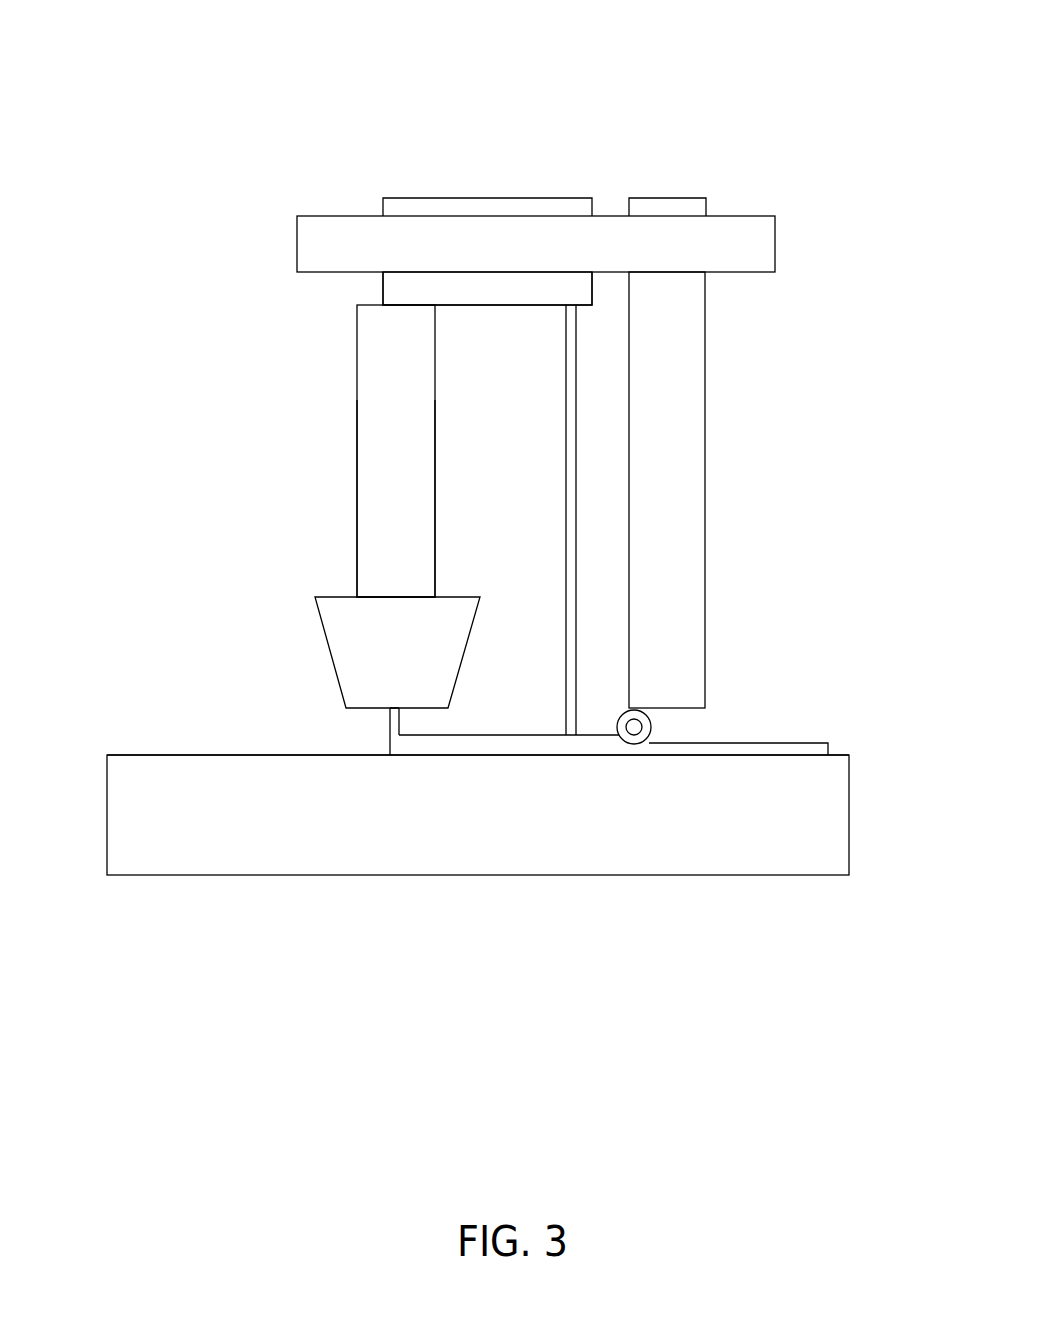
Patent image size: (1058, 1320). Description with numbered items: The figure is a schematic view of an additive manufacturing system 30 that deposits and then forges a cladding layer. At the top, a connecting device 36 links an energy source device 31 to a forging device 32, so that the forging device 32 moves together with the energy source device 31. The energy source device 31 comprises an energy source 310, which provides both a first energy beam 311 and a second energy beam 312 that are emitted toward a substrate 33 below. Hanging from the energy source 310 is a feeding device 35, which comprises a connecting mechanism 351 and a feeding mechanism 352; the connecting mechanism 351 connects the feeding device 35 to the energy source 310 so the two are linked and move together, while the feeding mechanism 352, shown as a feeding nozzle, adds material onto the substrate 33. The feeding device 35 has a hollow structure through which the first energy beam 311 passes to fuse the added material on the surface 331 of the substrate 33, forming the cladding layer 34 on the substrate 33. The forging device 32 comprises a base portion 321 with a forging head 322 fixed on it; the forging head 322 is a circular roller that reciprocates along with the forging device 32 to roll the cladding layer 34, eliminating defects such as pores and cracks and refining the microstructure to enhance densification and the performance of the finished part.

The additive manufacturing system 30 is at (384, 49).
The energy source device 31 is at (473, 202).
The energy source 310 is at (468, 288).
The first energy beam 311 is at (390, 728).
The second energy beam 312 is at (565, 463).
The forging device 32 is at (705, 200).
The base portion 321 is at (706, 463).
The forging head 322 is at (652, 728).
The substrate 33 is at (849, 818).
The surface 331 is at (175, 753).
The cladding layer 34 is at (470, 745).
The feeding device 35 is at (415, 382).
The connecting mechanism 351 is at (377, 563).
The feeding mechanism 352 is at (357, 633).
The connecting device 36 is at (775, 247).